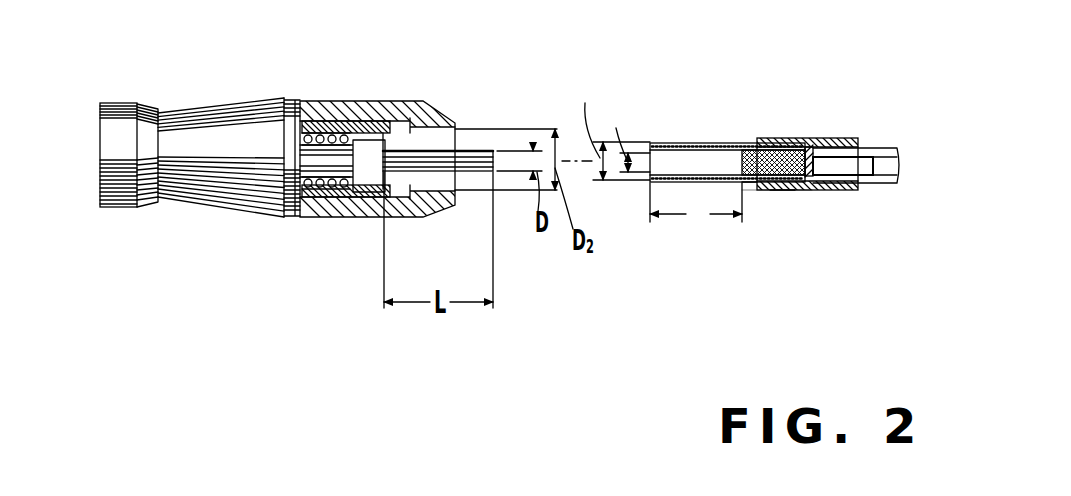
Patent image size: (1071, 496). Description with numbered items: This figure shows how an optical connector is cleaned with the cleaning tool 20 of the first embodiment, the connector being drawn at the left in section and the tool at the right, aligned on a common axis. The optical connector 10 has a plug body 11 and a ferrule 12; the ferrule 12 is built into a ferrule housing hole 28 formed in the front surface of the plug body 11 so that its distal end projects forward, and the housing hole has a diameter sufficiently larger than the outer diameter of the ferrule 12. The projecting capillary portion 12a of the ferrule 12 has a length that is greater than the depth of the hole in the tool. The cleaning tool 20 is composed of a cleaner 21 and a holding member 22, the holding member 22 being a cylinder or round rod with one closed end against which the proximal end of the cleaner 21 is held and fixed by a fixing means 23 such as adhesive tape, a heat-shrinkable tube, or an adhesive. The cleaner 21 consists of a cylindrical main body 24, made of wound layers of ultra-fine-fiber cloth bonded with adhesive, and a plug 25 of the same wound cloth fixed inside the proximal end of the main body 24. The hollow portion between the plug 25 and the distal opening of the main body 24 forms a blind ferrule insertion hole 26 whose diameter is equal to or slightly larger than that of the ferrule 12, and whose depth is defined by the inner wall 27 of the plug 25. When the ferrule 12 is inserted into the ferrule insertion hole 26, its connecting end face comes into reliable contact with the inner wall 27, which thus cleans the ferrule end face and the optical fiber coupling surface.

The optical connector 10 is at (368, 38).
The plug body 11 is at (399, 104).
The ferrule 12 is at (472, 151).
The capillary portion 12a is at (452, 172).
The ferrule housing hole 28 is at (435, 133).
The cleaning tool for an optical connector 20 is at (833, 81).
The cleaner 21 is at (812, 269).
The holding member 22 is at (882, 148).
The fixing means 23 is at (827, 191).
The main body 24 is at (744, 190).
The plug 25 is at (781, 190).
The ferrule insertion hole 26 is at (692, 160).
The inner wall 27 is at (741, 149).